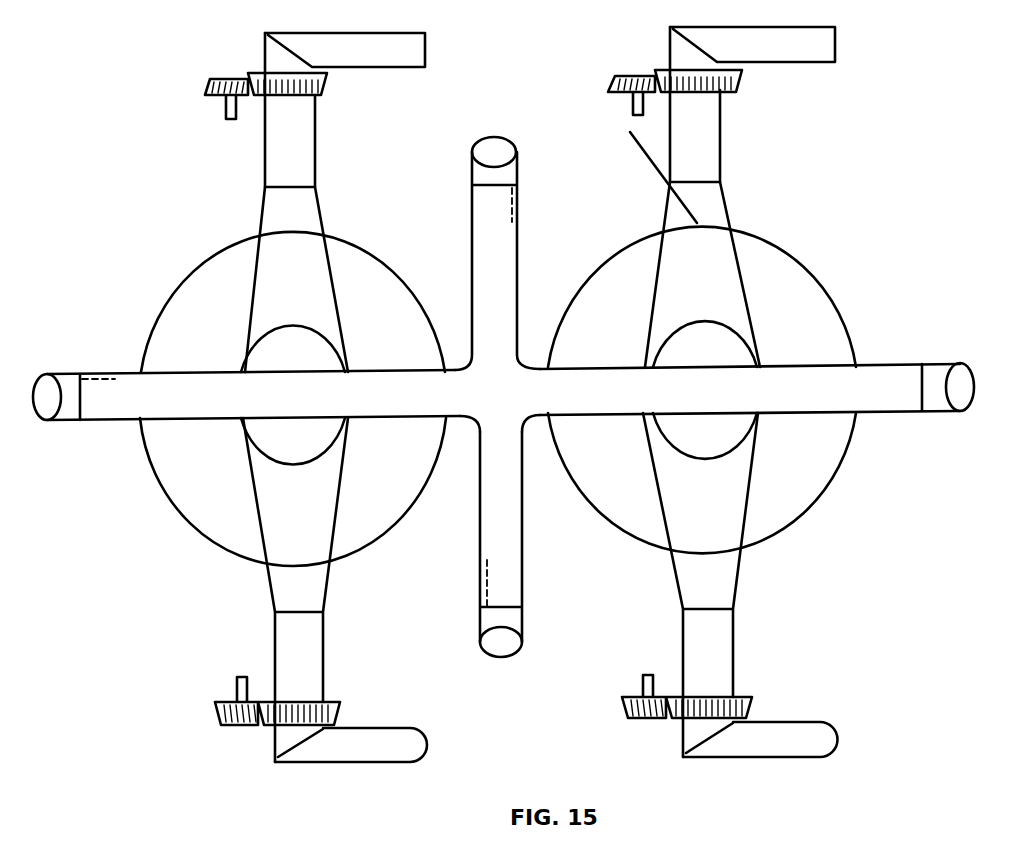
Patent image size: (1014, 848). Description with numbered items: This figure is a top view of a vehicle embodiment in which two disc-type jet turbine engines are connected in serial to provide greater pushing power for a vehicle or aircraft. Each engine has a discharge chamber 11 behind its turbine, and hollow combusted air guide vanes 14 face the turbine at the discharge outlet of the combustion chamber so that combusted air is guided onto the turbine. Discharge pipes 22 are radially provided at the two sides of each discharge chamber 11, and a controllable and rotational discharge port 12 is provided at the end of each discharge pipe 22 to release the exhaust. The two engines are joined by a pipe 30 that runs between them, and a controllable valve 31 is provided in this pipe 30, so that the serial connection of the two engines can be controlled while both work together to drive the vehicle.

The discharge chamber 11 is at (260, 375).
The controllable and rotational discharge port 12 is at (405, 742).
The hollow combusted air guide vane 14 is at (198, 312).
The discharge pipe 22 is at (288, 230).
The pipe 30 is at (537, 423).
The controllable valve 31 is at (473, 170).